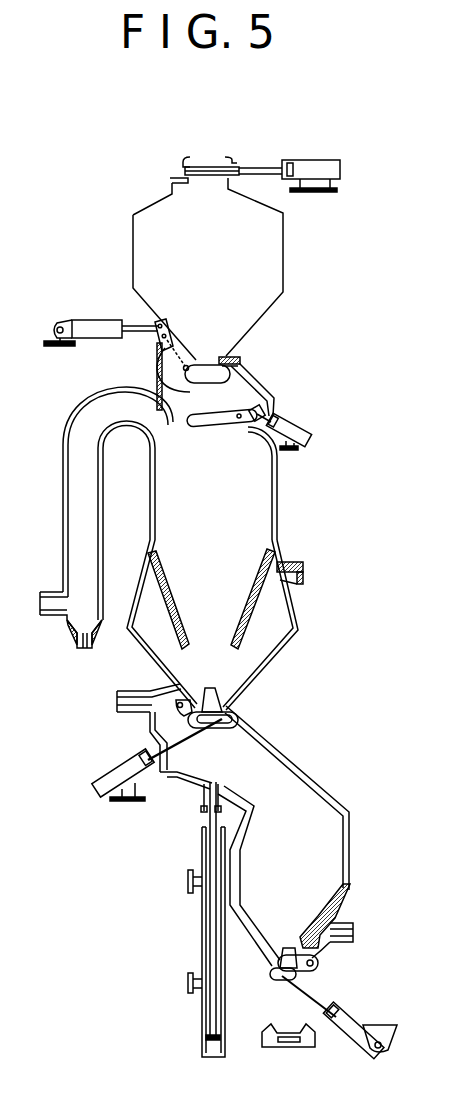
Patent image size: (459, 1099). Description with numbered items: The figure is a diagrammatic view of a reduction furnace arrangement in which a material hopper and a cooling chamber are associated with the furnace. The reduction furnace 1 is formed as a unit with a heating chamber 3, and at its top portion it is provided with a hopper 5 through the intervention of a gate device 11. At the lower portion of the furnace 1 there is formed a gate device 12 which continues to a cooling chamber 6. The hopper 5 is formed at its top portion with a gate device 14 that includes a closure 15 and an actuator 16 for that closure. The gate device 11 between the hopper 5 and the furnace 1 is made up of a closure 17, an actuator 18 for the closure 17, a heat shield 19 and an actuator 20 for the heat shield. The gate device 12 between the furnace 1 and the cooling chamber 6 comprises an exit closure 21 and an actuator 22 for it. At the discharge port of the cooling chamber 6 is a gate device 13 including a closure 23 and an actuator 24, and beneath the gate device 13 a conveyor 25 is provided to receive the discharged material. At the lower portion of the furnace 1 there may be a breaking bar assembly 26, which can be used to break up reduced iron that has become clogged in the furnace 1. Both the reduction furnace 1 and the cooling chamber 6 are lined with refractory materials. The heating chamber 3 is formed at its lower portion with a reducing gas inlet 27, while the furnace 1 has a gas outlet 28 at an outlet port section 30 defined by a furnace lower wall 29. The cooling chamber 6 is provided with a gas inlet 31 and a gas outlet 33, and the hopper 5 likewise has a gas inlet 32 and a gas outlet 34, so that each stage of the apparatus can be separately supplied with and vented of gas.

The reduction furnace 1 is at (277, 512).
The heating chamber 3 is at (63, 490).
The hopper 5 is at (283, 243).
The cooling chamber 6 is at (331, 803).
The gate device 11 is at (263, 395).
The gate device 12 is at (145, 728).
The gate device 13 is at (277, 960).
The gate device 14 is at (207, 180).
The closure 15 is at (206, 166).
The actuator 16 is at (322, 160).
The closure 17 is at (195, 378).
The actuator 18 is at (95, 318).
The heat shield 19 is at (213, 426).
The actuator 20 is at (298, 421).
The exit closure 21 is at (223, 730).
The actuator 22 is at (100, 772).
The closure 23 is at (282, 982).
The actuator 24 is at (357, 1020).
The conveyor 25 is at (278, 1047).
The breaking bar assembly 26 is at (200, 940).
The reducing gas inlet 27 is at (55, 590).
The gas outlet 28 is at (290, 563).
The furnace lower wall 29 is at (247, 632).
The outlet port section 30 is at (293, 622).
The gas inlet 31 is at (343, 943).
The gas inlet 32 is at (237, 357).
The gas outlet 33 is at (135, 678).
The gas outlet 34 is at (172, 178).